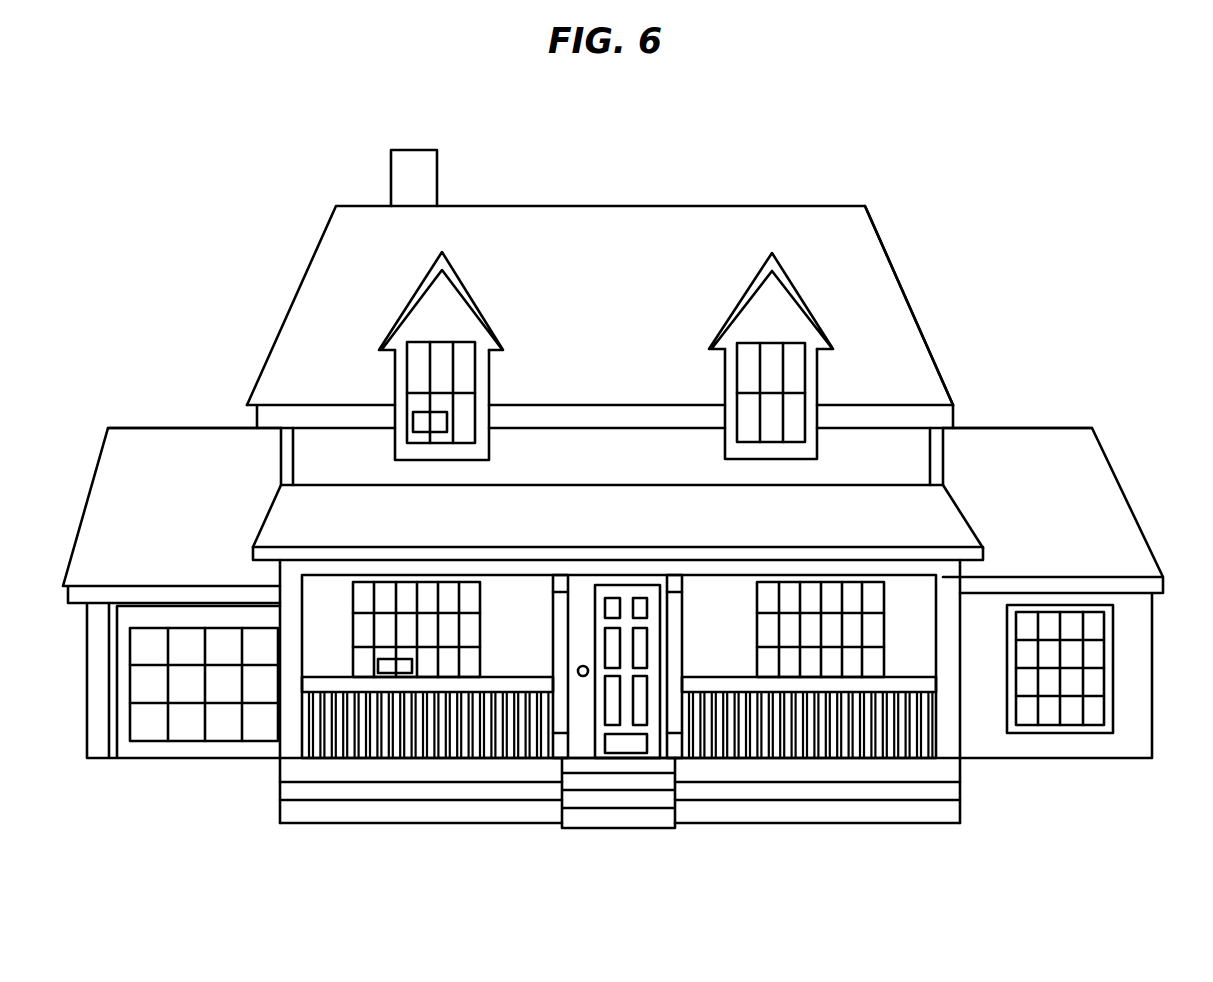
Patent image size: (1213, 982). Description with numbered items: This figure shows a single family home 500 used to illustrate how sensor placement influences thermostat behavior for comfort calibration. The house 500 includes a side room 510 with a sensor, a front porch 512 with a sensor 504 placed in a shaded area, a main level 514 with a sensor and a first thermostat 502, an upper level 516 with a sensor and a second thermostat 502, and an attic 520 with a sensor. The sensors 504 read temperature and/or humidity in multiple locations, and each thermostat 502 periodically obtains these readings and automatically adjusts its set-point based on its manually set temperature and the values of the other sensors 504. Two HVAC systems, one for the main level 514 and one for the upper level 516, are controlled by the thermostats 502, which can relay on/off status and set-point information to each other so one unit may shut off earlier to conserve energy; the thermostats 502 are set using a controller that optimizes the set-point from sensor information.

The single family home 500 is at (627, 93).
The thermostat 502 is at (412, 421).
The sensor 504 is at (583, 677).
The side room 510 is at (1122, 648).
The front porch 512 is at (716, 657).
The main level 514 is at (913, 647).
The upper level 516 is at (892, 447).
The attic 520 is at (868, 258).